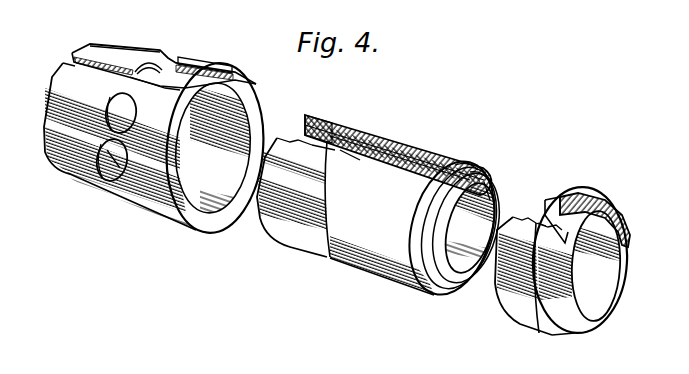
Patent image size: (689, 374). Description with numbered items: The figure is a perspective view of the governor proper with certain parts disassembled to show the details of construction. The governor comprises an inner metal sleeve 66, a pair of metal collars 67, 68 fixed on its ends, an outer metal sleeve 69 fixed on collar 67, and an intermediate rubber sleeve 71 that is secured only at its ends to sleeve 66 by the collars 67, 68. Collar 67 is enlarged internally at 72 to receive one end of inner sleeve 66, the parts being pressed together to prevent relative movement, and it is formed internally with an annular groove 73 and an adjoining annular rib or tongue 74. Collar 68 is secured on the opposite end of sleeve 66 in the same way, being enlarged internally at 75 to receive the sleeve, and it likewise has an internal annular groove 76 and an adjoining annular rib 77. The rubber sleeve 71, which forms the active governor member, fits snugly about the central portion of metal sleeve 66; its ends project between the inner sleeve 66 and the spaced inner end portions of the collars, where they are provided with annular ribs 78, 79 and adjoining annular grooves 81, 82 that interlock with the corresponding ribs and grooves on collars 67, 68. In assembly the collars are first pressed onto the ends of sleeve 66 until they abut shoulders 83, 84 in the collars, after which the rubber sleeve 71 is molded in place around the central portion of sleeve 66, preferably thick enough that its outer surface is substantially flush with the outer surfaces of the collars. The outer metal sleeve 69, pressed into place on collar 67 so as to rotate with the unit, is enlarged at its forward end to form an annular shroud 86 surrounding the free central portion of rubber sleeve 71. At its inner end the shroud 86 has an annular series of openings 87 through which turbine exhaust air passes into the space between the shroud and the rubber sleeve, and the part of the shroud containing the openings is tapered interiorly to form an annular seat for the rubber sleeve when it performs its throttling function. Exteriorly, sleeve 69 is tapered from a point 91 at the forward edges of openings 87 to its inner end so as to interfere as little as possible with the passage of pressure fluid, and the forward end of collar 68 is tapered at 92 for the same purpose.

The inner metal sleeve 66 is at (494, 192).
The metal collar 67 is at (284, 229).
The metal collar 68 is at (580, 203).
The outer metal sleeve 69 is at (118, 50).
The rubber sleeve 71 is at (423, 147).
The internal enlargement 72 is at (331, 129).
The annular groove 73 is at (356, 128).
The annular rib 74 is at (364, 136).
The internal enlargement 75 is at (567, 234).
The annular groove 76 is at (546, 210).
The annular rib 77 is at (544, 195).
The annular rib 78 is at (337, 152).
The annular rib 79 is at (481, 178).
The annular groove 81 is at (356, 167).
The annular groove 82 is at (460, 167).
The shoulder 83 is at (305, 122).
The shoulder 84 is at (613, 212).
The annular shroud 86 is at (170, 208).
The openings 87 is at (116, 157).
The taper point 91 is at (125, 176).
The tapered forward end 92 is at (568, 333).